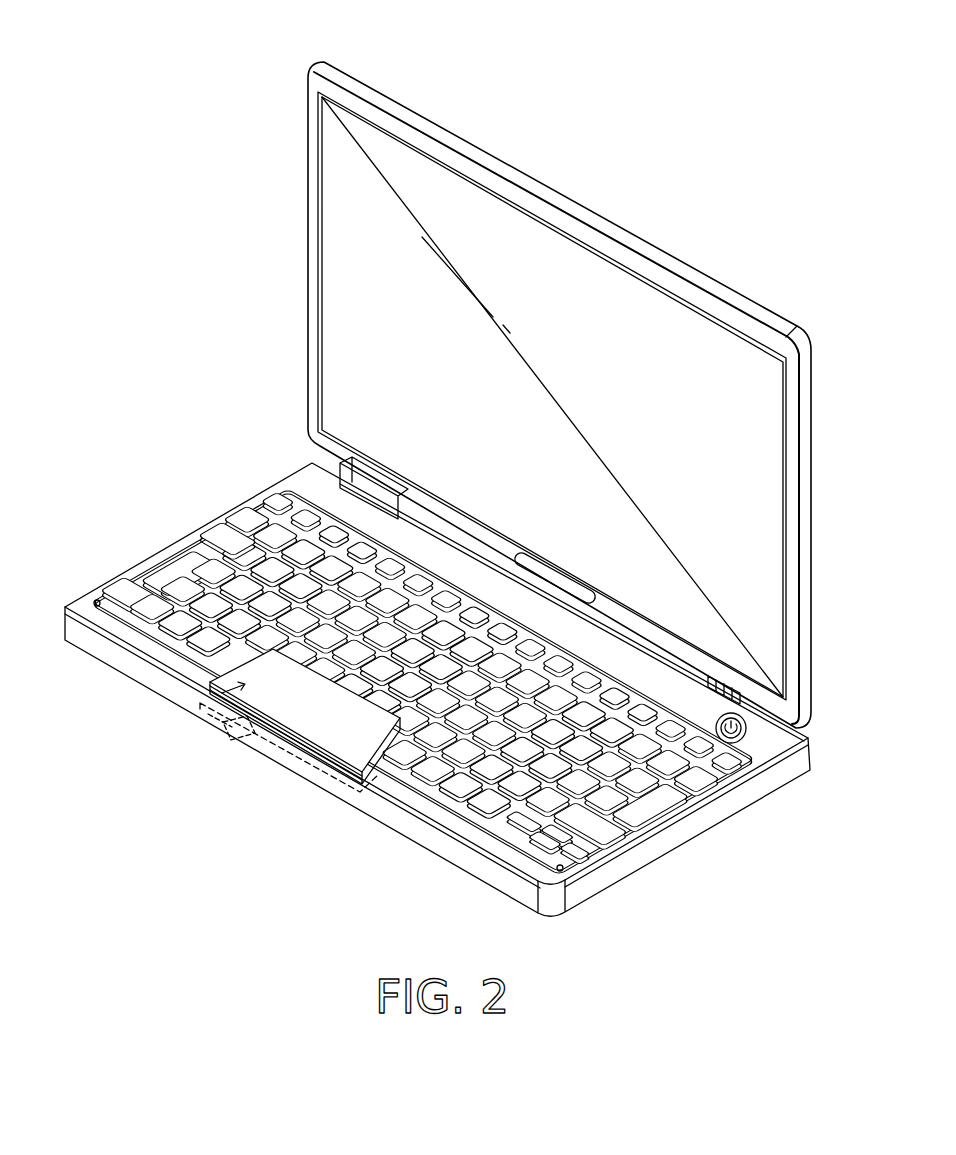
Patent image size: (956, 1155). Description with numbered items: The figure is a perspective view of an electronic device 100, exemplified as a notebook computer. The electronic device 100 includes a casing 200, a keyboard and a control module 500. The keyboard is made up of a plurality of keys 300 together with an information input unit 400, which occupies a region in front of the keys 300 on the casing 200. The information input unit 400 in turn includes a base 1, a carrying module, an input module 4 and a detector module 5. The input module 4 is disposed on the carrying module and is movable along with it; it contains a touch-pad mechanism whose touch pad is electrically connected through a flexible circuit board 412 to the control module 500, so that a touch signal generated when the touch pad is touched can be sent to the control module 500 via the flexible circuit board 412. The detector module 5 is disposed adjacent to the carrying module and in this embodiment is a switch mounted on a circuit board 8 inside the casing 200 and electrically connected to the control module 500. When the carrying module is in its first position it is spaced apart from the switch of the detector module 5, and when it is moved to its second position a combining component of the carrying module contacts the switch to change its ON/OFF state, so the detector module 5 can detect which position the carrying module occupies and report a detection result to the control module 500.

The electronic device 100 is at (605, 165).
The casing 200 is at (165, 545).
The keys 300 is at (665, 770).
The information input unit 400 is at (242, 775).
The flexible circuit board 412 is at (407, 780).
The control module 500 is at (226, 535).
The input module 4 is at (340, 735).
The base 1 is at (345, 778).
The detector module 5 is at (215, 720).
The circuit board 8 is at (236, 735).